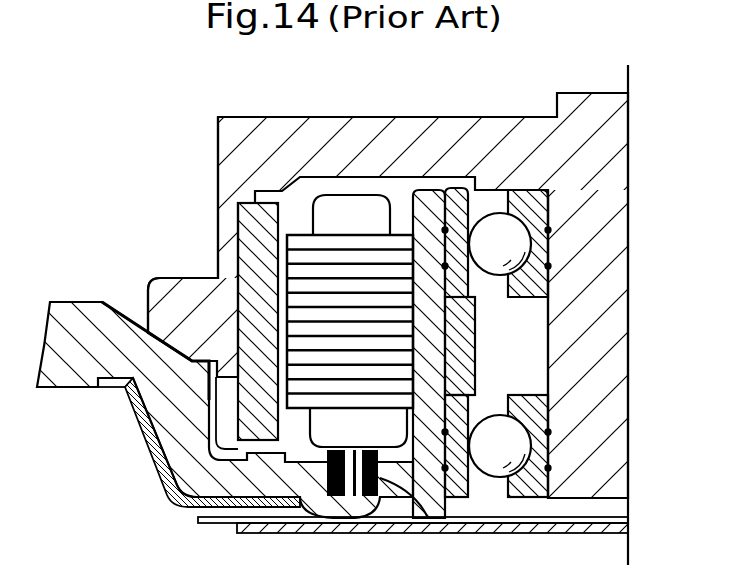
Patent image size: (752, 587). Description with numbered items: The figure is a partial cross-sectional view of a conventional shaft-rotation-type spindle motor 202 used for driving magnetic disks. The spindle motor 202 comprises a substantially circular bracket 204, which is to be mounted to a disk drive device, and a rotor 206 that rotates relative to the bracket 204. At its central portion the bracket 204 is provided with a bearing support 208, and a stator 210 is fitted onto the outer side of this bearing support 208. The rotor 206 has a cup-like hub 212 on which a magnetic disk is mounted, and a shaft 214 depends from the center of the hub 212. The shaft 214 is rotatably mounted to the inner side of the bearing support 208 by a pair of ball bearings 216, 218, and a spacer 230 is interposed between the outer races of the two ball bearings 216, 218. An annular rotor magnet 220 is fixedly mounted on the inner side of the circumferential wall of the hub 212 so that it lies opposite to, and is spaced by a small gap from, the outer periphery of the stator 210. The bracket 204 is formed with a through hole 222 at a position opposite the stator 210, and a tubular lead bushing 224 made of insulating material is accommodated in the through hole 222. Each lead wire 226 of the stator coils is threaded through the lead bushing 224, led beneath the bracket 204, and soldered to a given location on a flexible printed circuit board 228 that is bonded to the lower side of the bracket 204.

The spindle motor 202 is at (331, 72).
The bracket 204 is at (63, 301).
The rotor 206 is at (252, 117).
The bearing support 208 is at (433, 193).
The stator 210 is at (287, 280).
The hub 212 is at (233, 160).
The shaft 214 is at (610, 295).
The ball bearing 216 is at (548, 212).
The ball bearing 218 is at (548, 452).
The rotor magnet 220 is at (238, 220).
The through hole 222 is at (332, 497).
The lead bushing 224 is at (422, 512).
The lead wire 226 is at (354, 497).
The flexible printed circuit board 228 is at (178, 507).
The spacer 230 is at (472, 373).